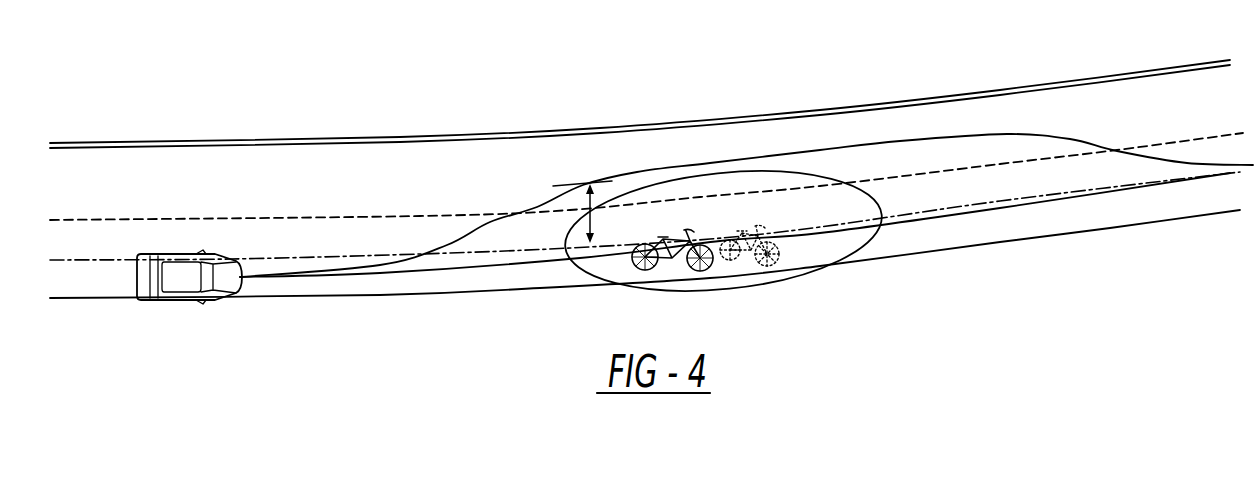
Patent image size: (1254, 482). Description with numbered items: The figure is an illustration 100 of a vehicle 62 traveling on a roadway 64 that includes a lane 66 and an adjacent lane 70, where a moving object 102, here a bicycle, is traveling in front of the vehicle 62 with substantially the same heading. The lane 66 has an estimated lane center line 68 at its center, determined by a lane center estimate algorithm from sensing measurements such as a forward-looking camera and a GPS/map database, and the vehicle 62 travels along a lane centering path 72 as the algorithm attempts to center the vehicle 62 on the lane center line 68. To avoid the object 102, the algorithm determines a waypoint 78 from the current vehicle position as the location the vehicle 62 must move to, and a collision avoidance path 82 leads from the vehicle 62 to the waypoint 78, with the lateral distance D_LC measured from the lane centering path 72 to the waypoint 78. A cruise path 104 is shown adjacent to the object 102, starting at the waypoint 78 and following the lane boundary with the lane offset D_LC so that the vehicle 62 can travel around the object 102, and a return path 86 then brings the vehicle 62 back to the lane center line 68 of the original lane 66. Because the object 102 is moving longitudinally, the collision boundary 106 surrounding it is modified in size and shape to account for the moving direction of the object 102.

The vehicle 62 is at (182, 275).
The roadway 64 is at (372, 140).
The lane 66 is at (90, 280).
The lane center line 68 is at (349, 257).
The adjacent lane 70 is at (80, 168).
The lane centering path 72 is at (510, 270).
The waypoint 78 is at (647, 178).
The collision avoidance path 82 is at (493, 232).
The return path 86 is at (1069, 138).
The illustration 100 is at (914, 70).
The moving object 102 is at (702, 271).
The cruise path 104 is at (797, 153).
The collision boundary 106 is at (861, 247).